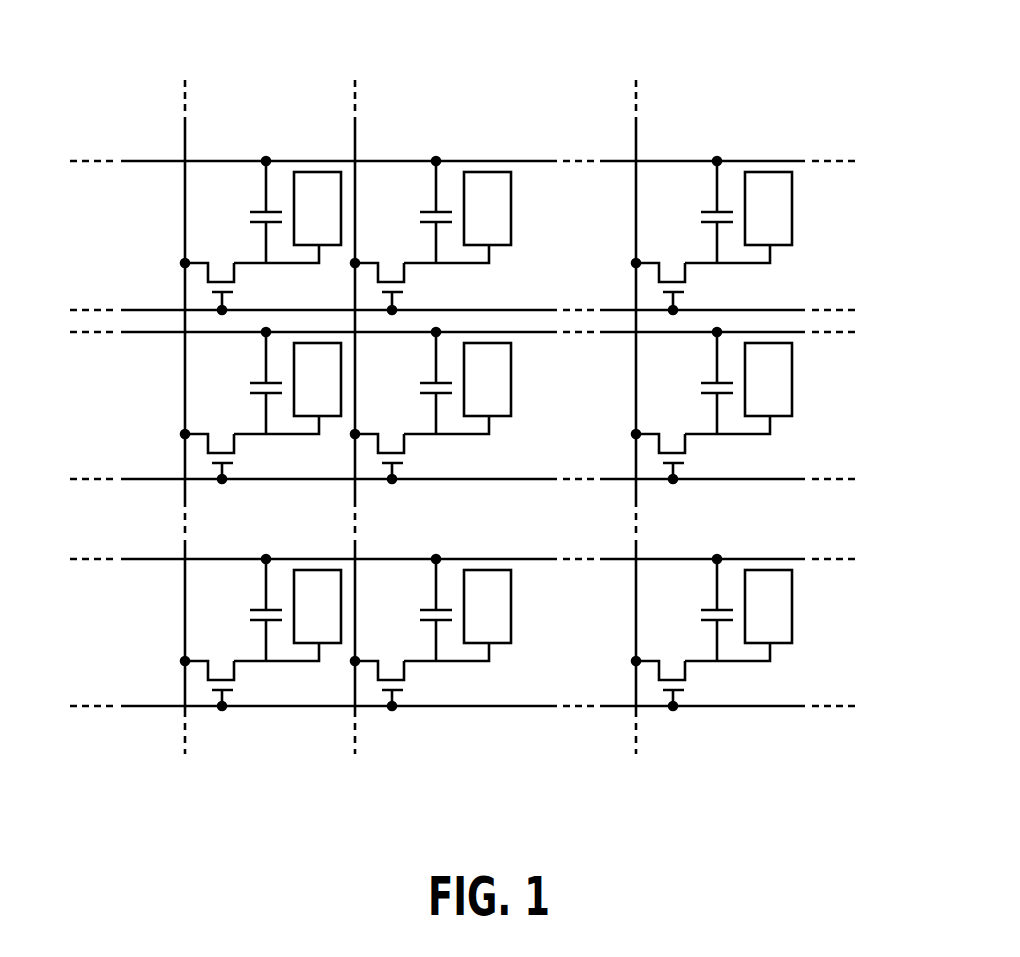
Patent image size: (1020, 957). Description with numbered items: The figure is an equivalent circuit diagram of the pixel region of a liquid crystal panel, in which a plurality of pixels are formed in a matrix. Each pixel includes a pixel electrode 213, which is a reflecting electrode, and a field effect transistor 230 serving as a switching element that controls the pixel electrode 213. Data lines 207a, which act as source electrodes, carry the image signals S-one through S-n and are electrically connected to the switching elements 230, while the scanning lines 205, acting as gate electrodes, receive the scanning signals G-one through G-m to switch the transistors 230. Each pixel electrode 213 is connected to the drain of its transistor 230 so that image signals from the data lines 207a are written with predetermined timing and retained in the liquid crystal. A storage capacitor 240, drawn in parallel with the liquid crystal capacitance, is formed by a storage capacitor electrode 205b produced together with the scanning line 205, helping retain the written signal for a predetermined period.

The data line 207a is at (666, 121).
The scanning line 205 is at (837, 668).
The storage capacitor electrode 205b is at (788, 158).
The storage capacitor 240 is at (250, 217).
The field effect transistor 230 is at (237, 274).
The pixel electrode 213 is at (502, 247).